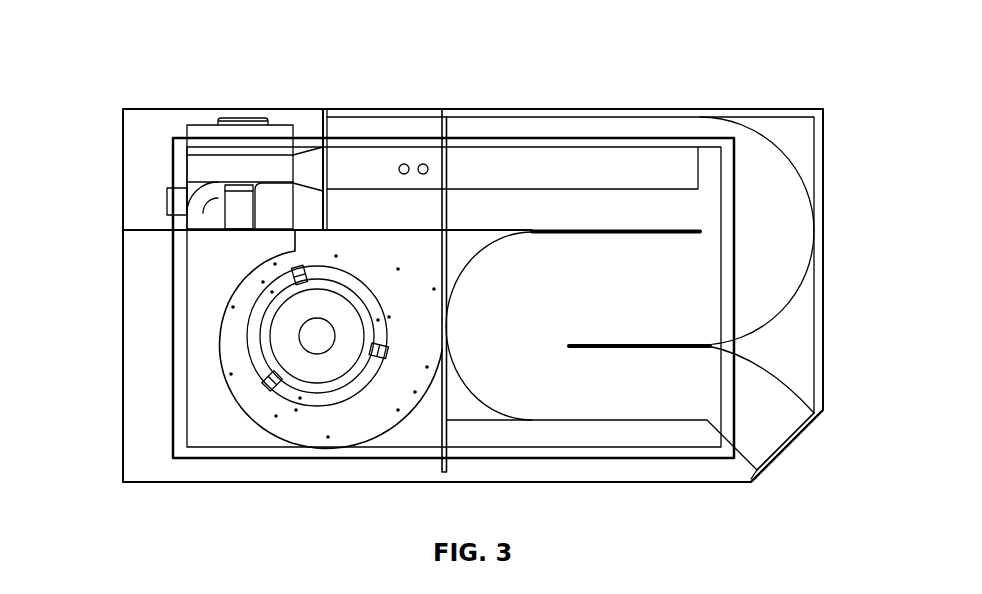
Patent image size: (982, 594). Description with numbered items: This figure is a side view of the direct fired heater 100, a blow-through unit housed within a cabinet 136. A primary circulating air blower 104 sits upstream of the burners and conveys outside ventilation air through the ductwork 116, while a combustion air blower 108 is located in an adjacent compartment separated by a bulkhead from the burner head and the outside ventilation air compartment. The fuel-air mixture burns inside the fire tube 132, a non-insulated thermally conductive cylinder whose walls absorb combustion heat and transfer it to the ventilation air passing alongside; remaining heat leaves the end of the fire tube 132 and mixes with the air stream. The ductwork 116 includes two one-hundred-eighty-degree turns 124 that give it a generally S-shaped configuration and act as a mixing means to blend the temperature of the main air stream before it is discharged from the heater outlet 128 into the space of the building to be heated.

The direct fired heater 100 is at (138, 40).
The primary circulating air blower 104 is at (258, 420).
The combustion air blower 108 is at (269, 133).
The ductwork 116 is at (777, 318).
The turns 124 is at (785, 155).
The heater outlet 128 is at (787, 443).
The fire tube 132 is at (520, 169).
The cabinet 136 is at (122, 437).